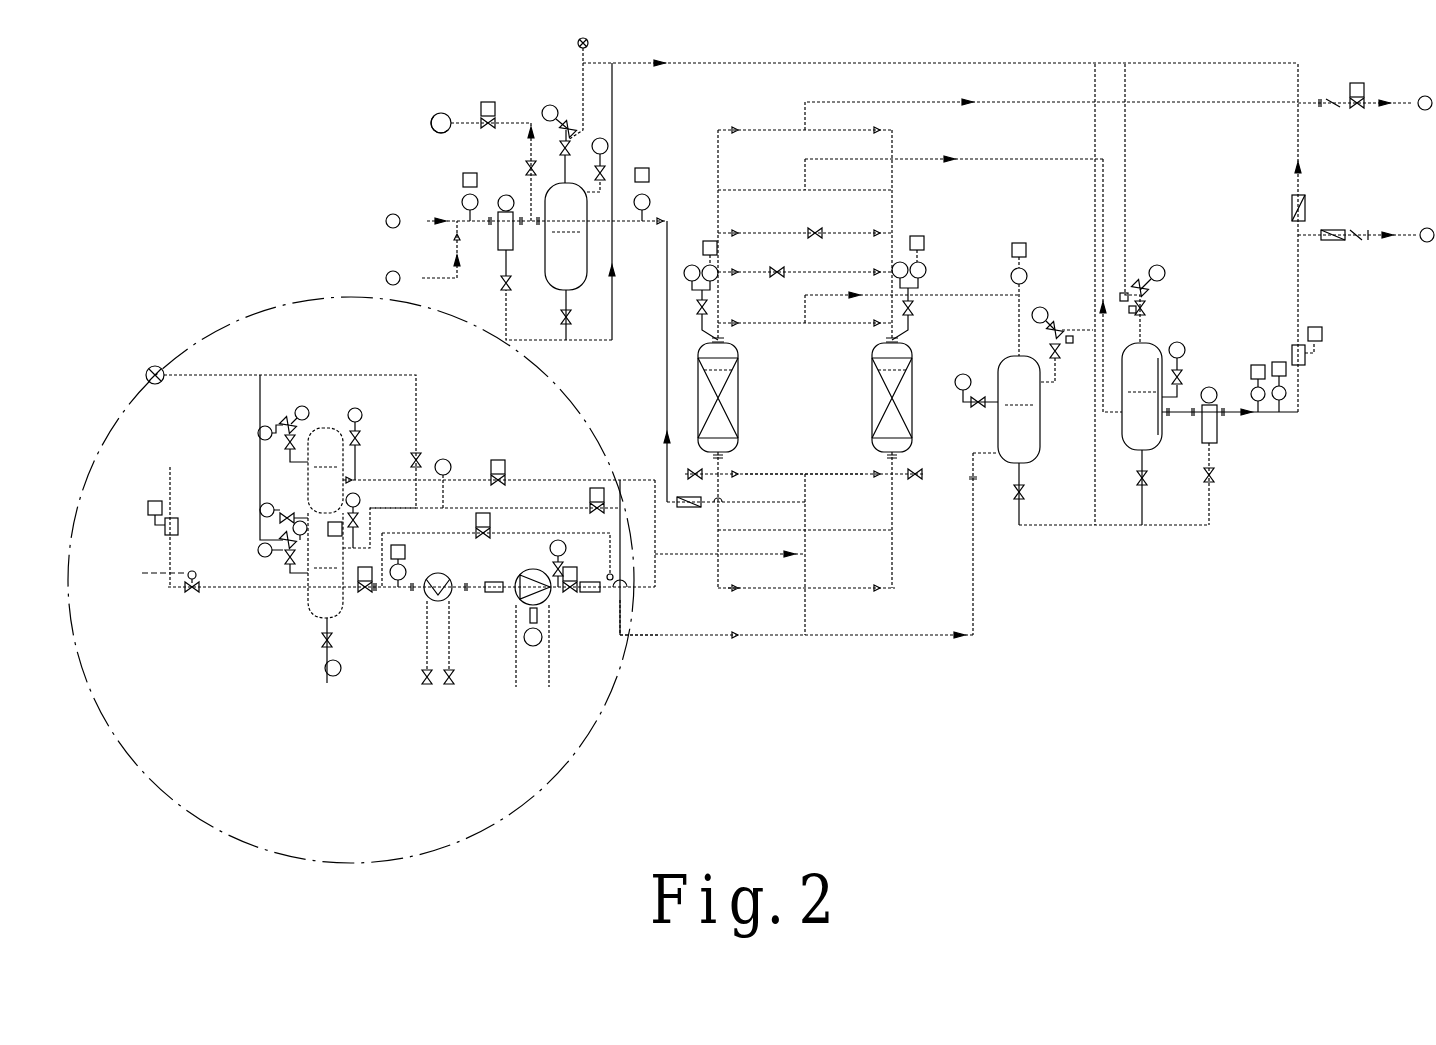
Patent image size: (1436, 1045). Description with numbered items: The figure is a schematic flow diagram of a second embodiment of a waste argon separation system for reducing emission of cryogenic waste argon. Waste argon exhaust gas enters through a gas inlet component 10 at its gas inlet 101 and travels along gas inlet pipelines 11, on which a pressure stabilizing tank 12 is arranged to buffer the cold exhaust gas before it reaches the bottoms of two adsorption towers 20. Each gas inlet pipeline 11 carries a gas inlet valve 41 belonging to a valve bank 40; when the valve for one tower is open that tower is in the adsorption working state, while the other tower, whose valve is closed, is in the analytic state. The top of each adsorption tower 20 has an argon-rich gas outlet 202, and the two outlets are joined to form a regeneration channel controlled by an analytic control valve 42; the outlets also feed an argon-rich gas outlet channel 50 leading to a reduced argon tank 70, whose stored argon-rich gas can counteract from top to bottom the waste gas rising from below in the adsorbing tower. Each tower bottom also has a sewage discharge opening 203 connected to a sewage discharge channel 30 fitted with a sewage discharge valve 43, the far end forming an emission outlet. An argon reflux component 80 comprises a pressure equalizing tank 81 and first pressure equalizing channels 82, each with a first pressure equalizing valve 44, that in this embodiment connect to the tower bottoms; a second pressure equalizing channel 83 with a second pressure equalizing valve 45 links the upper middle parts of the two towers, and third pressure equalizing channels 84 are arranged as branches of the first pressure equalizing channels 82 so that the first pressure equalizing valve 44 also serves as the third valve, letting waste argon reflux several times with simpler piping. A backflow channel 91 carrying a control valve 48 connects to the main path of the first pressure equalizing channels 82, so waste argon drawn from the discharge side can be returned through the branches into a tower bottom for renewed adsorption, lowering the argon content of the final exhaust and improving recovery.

The gas inlet component 10 is at (432, 154).
The pressure stabilizing tank 12 is at (553, 222).
The gas inlet 101 is at (472, 223).
The adsorption tower 20 is at (872, 375).
The argon-rich gas outlet 202 is at (718, 340).
The sewage discharge opening 203 is at (714, 453).
The gas inlet pipeline 11 is at (783, 476).
The sewage discharge channel 30 is at (735, 530).
The gas inlet valve 41 is at (846, 474).
The analytic control valve 42 is at (783, 270).
The sewage discharge valve 43 is at (845, 530).
The first pressure equalizing valve 44 is at (862, 593).
The second pressure equalizing valve 45 is at (808, 228).
The control valve 48 is at (745, 640).
The valve bank 40 is at (950, 638).
The second pressure equalizing channel 83 is at (833, 233).
The third pressure equalizing channel 84 is at (718, 588).
The argon-rich gas outlet channel 50 is at (1103, 290).
The reduced argon tank 70 is at (1142, 342).
The argon reflux component 80 is at (1085, 550).
The pressure equalizing tank 81 is at (1021, 463).
The first pressure equalizing channel 82 is at (973, 537).
The backflow channel 91 is at (677, 640).